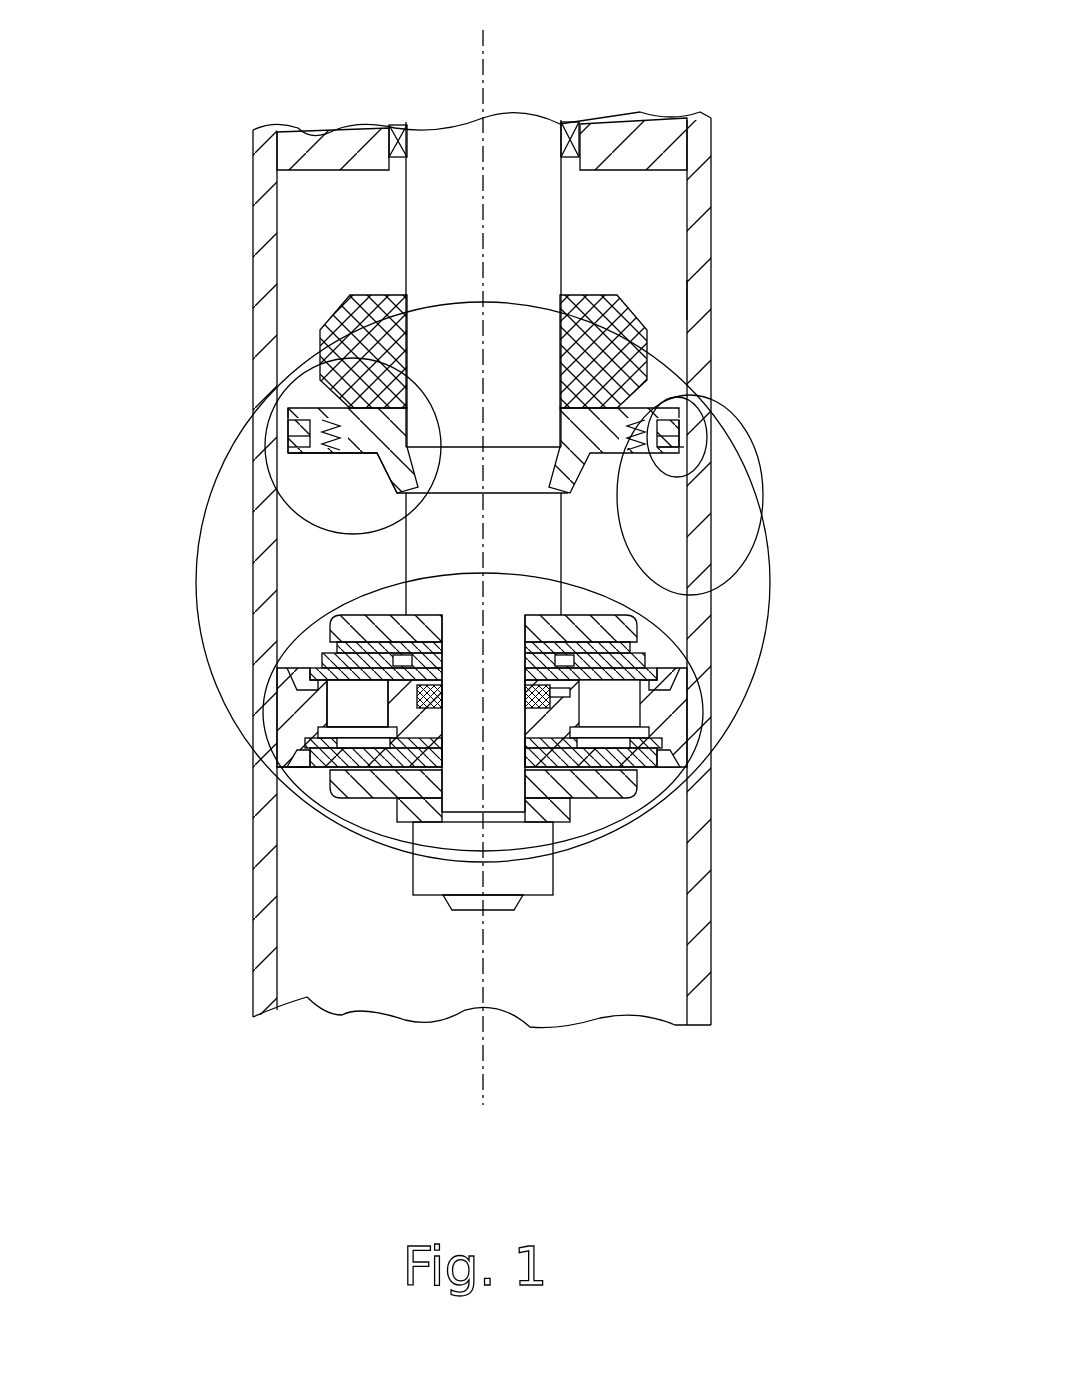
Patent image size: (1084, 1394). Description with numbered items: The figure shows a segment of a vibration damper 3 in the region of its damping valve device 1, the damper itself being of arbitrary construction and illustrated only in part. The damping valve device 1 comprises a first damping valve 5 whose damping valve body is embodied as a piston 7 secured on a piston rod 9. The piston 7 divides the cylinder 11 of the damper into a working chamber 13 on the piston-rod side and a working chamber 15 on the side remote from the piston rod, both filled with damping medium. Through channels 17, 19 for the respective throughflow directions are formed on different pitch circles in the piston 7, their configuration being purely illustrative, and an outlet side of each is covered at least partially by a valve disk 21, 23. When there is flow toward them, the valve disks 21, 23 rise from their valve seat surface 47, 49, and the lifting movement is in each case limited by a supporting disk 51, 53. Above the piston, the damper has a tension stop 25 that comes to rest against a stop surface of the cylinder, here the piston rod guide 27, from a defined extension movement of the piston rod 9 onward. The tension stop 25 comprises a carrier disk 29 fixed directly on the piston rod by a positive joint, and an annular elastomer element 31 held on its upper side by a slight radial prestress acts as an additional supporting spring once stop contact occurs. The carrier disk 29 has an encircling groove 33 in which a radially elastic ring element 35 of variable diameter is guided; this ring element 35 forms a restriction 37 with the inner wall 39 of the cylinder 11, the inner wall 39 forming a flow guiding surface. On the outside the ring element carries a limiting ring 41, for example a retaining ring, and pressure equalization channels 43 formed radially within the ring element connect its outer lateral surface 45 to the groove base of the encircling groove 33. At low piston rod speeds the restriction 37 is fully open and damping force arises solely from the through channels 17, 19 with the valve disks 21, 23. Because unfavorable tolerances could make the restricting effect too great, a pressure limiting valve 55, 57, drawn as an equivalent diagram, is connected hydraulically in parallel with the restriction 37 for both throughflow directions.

The damping valve device 1 is at (283, 758).
The vibration damper 3 is at (178, 413).
The first damping valve 5 is at (667, 635).
The piston 7 is at (667, 720).
The piston rod 9 is at (535, 147).
The cylinder 11 is at (690, 915).
The working chamber on the piston-rod side 13 is at (598, 233).
The working chamber on the side remote from the piston rod 15 is at (578, 985).
The through channel 17 is at (660, 745).
The through channel 19 is at (297, 690).
The valve disk 21 is at (652, 663).
The valve disk 23 is at (673, 755).
The tension stop 25 is at (262, 433).
The piston rod guide 27 is at (648, 136).
The carrier disk 29 is at (377, 453).
The annular elastomer element 31 is at (590, 355).
The encircling groove 33 is at (690, 470).
The ring element 35 is at (683, 455).
The restriction 37 is at (640, 428).
The inner wall 39 is at (686, 303).
The limiting ring 41 is at (680, 426).
The pressure equalization channels 43 is at (668, 450).
The outer lateral surface 45 is at (686, 433).
The valve seat surface 47 is at (640, 725).
The valve seat surface 49 is at (353, 710).
The supporting disk 51 is at (340, 643).
The supporting disk 53 is at (350, 783).
The pressure limiting valve 55 is at (690, 555).
The pressure limiting valve 57 is at (397, 478).